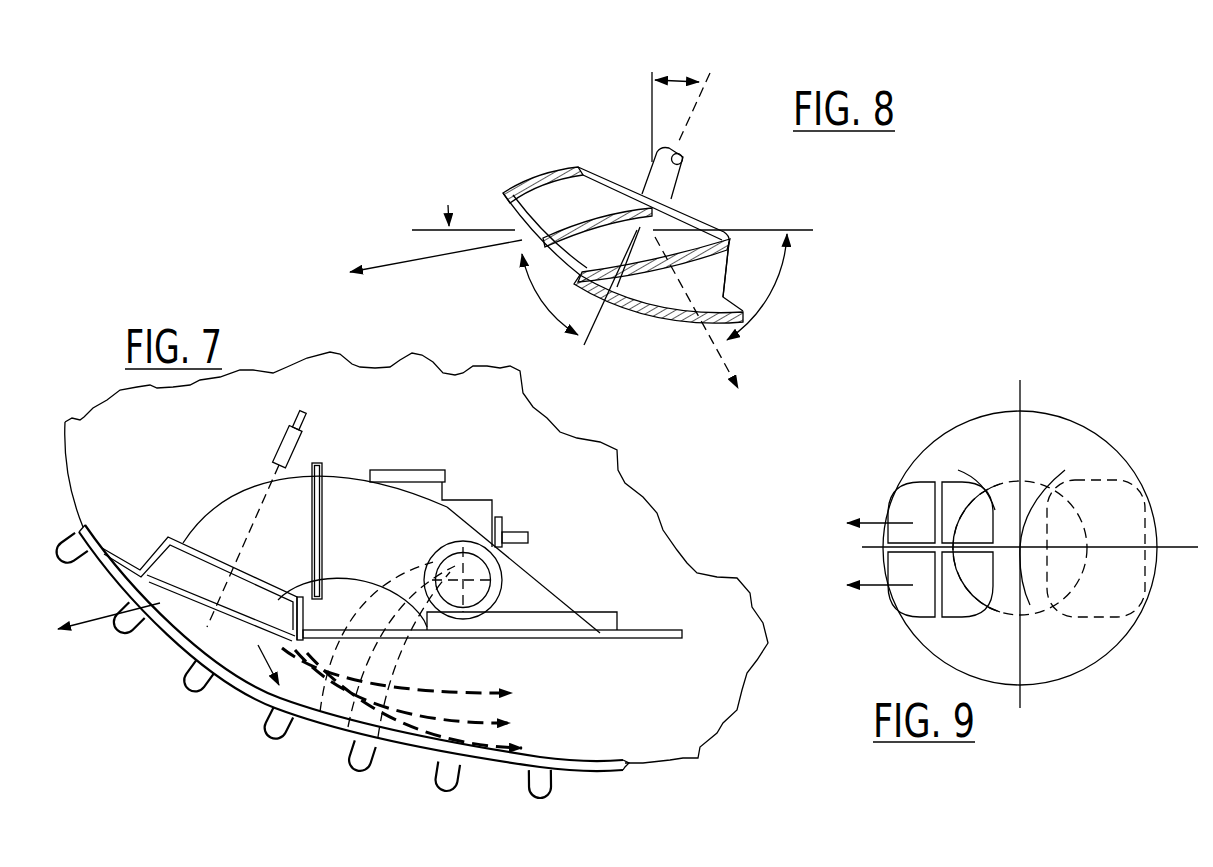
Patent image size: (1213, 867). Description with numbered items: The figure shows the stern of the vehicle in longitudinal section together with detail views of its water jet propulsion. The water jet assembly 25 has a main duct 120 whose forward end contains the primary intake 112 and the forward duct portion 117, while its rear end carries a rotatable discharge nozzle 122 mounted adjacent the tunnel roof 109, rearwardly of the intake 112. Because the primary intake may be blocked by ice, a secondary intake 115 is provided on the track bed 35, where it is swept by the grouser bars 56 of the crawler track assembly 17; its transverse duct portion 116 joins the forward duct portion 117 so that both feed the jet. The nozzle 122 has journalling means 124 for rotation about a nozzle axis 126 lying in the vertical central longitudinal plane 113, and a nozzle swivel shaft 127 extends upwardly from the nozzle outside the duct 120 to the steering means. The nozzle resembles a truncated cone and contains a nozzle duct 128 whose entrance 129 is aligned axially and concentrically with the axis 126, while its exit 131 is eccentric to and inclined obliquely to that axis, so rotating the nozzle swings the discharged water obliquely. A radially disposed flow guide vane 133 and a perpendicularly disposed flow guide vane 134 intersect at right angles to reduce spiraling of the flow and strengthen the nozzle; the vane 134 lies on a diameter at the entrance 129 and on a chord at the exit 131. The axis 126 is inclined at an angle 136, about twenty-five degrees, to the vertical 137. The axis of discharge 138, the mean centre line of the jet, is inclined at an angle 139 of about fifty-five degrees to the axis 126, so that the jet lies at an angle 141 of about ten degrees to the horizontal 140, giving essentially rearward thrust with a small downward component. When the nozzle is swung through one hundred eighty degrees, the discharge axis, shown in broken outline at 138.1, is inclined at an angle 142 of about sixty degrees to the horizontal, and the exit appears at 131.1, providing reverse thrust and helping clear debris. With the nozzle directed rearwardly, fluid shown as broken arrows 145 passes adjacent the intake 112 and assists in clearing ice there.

In FIG. 7, the crawler track assembly 17 is at (405, 771).
In FIG. 7, the water jet assembly 25 is at (352, 407).
In FIG. 7, the track bed 35 is at (170, 691).
In FIG. 7, the grouser bars 56 is at (532, 793).
In FIG. 7, the tunnel roof 109 is at (663, 640).
In FIG. 7, the intake 112 is at (532, 640).
In FIG. 9, the vertical central longitudinal plane 113 is at (1168, 545).
In FIG. 7, the secondary intake 115 is at (328, 738).
In FIG. 7, the transverse duct portion 116 is at (406, 648).
In FIG. 7, the forward duct portion 117 is at (548, 587).
In FIG. 7, the main duct 120 is at (342, 490).
In FIG. 7, the discharge nozzle 122 is at (184, 572).
In FIG. 8, the discharge nozzle 122 is at (458, 130).
In FIG. 9, the discharge nozzle 122 is at (1104, 413).
In FIG. 7, the journalling means 124 is at (272, 459).
In FIG. 8, the journalling means 124 is at (676, 188).
In FIG. 7, the nozzle axis 126 is at (260, 508).
In FIG. 8, the nozzle axis 126 is at (693, 115).
In FIG. 9, the nozzle axis 126 is at (1053, 526).
In FIG. 7, the nozzle swivel shaft 127 is at (292, 430).
In FIG. 8, the nozzle duct 128 is at (615, 160).
In FIG. 8, the entrance 129 is at (708, 212).
In FIG. 9, the entrance 129 is at (1030, 617).
In FIG. 8, the exit 131 is at (555, 268).
In FIG. 9, the exit 131 is at (910, 599).
In FIG. 9, the exit in broken outline 131.1 is at (1100, 618).
In FIG. 8, the radially disposed flow guide vane 133 is at (528, 217).
In FIG. 9, the radially disposed flow guide vane 133 is at (908, 551).
In FIG. 8, the perpendicularly disposed flow guide vane 134 is at (598, 222).
In FIG. 9, the perpendicularly disposed flow guide vane 134 is at (942, 495).
In FIG. 8, the angle 136 is at (680, 77).
In FIG. 8, the vertical 137 is at (650, 97).
In FIG. 7, the axis of discharge 138 is at (97, 627).
In FIG. 8, the axis of discharge 138 is at (454, 262).
In FIG. 7, the discharge axis in broken outline 138.1 is at (256, 660).
In FIG. 8, the discharge axis in broken outline 138.1 is at (735, 357).
In FIG. 8, the angle 139 is at (566, 330).
In FIG. 8, the horizontal 140 is at (430, 229).
In FIG. 8, the angle 141 is at (447, 203).
In FIG. 8, the angle 142 is at (782, 270).
In FIG. 7, the broken arrows 145 is at (535, 688).